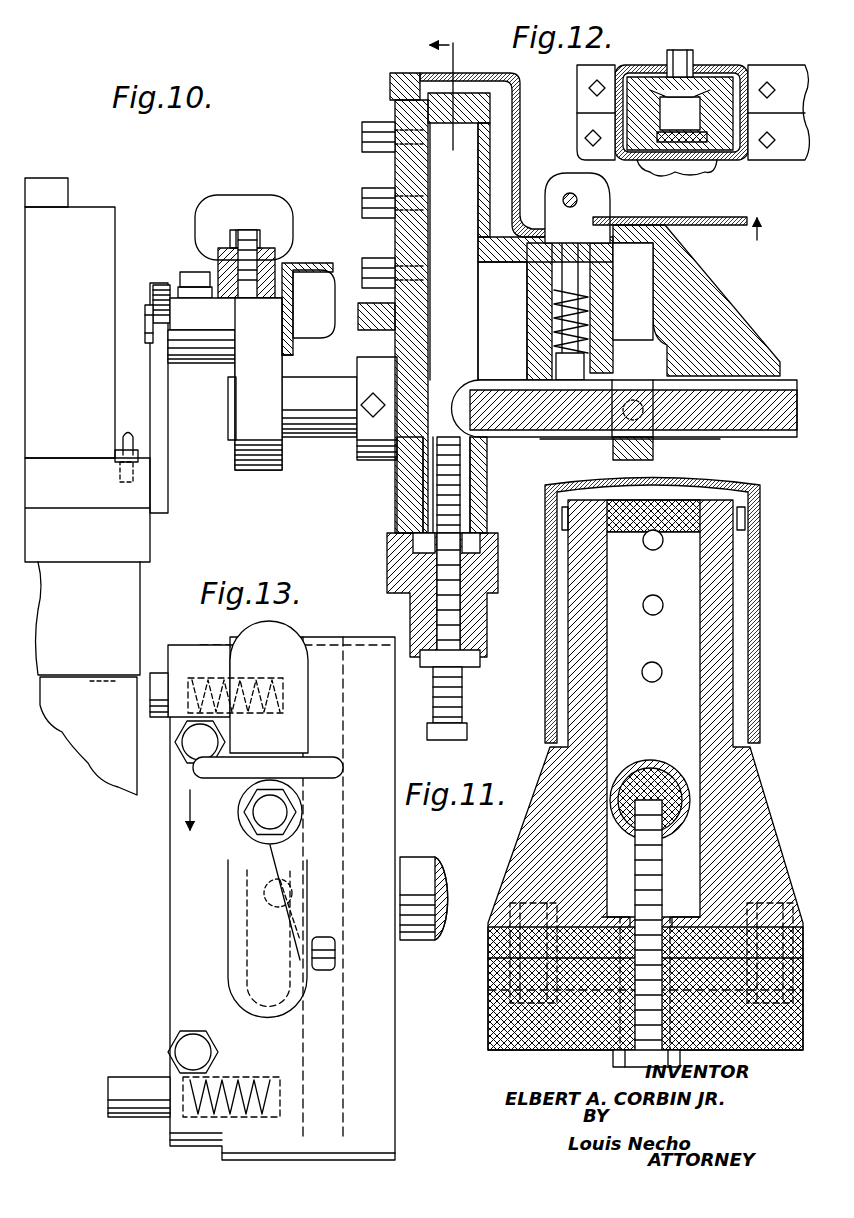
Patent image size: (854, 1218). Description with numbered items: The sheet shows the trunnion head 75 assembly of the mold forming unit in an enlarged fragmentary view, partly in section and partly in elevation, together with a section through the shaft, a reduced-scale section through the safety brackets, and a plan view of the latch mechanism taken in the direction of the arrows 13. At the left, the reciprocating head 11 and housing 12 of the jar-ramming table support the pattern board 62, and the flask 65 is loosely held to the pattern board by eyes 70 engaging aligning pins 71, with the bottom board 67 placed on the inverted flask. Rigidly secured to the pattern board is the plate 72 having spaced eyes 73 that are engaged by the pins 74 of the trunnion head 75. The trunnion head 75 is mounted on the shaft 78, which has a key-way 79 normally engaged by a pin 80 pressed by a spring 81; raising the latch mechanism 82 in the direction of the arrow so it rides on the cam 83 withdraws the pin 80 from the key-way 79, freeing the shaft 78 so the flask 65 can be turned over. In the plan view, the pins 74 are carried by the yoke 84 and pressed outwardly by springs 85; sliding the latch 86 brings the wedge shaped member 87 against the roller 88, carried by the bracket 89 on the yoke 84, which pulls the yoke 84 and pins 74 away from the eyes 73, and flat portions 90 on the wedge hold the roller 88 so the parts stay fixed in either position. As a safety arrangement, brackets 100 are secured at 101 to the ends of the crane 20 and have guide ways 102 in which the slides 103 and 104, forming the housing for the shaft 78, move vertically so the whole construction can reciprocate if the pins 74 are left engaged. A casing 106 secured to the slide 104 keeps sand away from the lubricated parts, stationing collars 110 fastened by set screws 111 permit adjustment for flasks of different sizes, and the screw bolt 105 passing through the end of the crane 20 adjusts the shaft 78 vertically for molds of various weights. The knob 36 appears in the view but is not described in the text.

In FIG. 10, the reciprocating head 11 is at (455, 705).
In FIG. 10, the housing 12 is at (530, 173).
In FIG. 10, the arrows 13— 13 is at (328, 150).
In FIG. 10, the crane 20 is at (478, 620).
In FIG. 11, the crane 20 is at (500, 1030).
In FIG. 10, the knob cap 36 is at (232, 202).
In FIG. 10, the pattern board 62 is at (87, 510).
In FIG. 10, the flask 65 is at (70, 332).
In FIG. 10, the bottom board 67 is at (75, 212).
In FIG. 10, the eyes 70 is at (130, 458).
In FIG. 10, the aligning pins 71 is at (125, 446).
In FIG. 10, the plate 72 is at (160, 385).
In FIG. 10, the spaced eyes 73 is at (158, 316).
In FIG. 10, the pins 74 is at (148, 333).
In FIG. 13, the pins 74 is at (152, 675).
In FIG. 10, the trunnion heads 75 is at (228, 368).
In FIG. 11, the trunnion heads 75 is at (650, 768).
In FIG. 13, the trunnion heads 75 is at (168, 860).
In FIG. 10, the shaft 78 is at (262, 383).
In FIG. 11, the shaft 78 is at (415, 872).
In FIG. 10, the key-ways 79 is at (752, 382).
In FIG. 10, the pins 80 is at (558, 360).
In FIG. 10, the springs 81 is at (600, 300).
In FIG. 10, the latch mechanism 82 is at (655, 230).
In FIG. 10, the cam 83 is at (490, 225).
In FIG. 10, the yoke 84 is at (293, 352).
In FIG. 13, the yoke 84 is at (335, 1020).
In FIG. 13, the springs 85 is at (255, 1077).
In FIG. 13, the latch 86 is at (330, 770).
In FIG. 10, the wedge shaped member 87 is at (265, 300).
In FIG. 13, the wedge shaped member 87 is at (312, 802).
In FIG. 10, the roller 88 is at (314, 304).
In FIG. 13, the roller 88 is at (275, 915).
In FIG. 10, the bracket 89 is at (300, 288).
In FIG. 13, the bracket 89 is at (326, 950).
In FIG. 13, the flat portions 90 is at (318, 728).
In FIG. 12, the brackets 100 is at (630, 106).
In FIG. 11, the brackets 100 is at (712, 662).
In FIG. 12, the bolted connection 101 is at (770, 84).
In FIG. 12, the guide ways 102 is at (715, 90).
In FIG. 10, the slide 103 is at (478, 237).
In FIG. 12, the slide 103 is at (683, 135).
In FIG. 10, the slide 104 is at (430, 330).
In FIG. 12, the slide 104 is at (712, 140).
In FIG. 11, the slide 104 is at (649, 558).
In FIG. 10, the screw bolt 105 is at (460, 482).
In FIG. 11, the screw bolt 105 is at (625, 1025).
In FIG. 10, the casing 106 is at (418, 73).
In FIG. 12, the casing 106 is at (618, 82).
In FIG. 11, the casing 106 is at (788, 600).
In FIG. 10, the stationing collars 110 is at (376, 420).
In FIG. 10, the set screws 111 is at (365, 414).